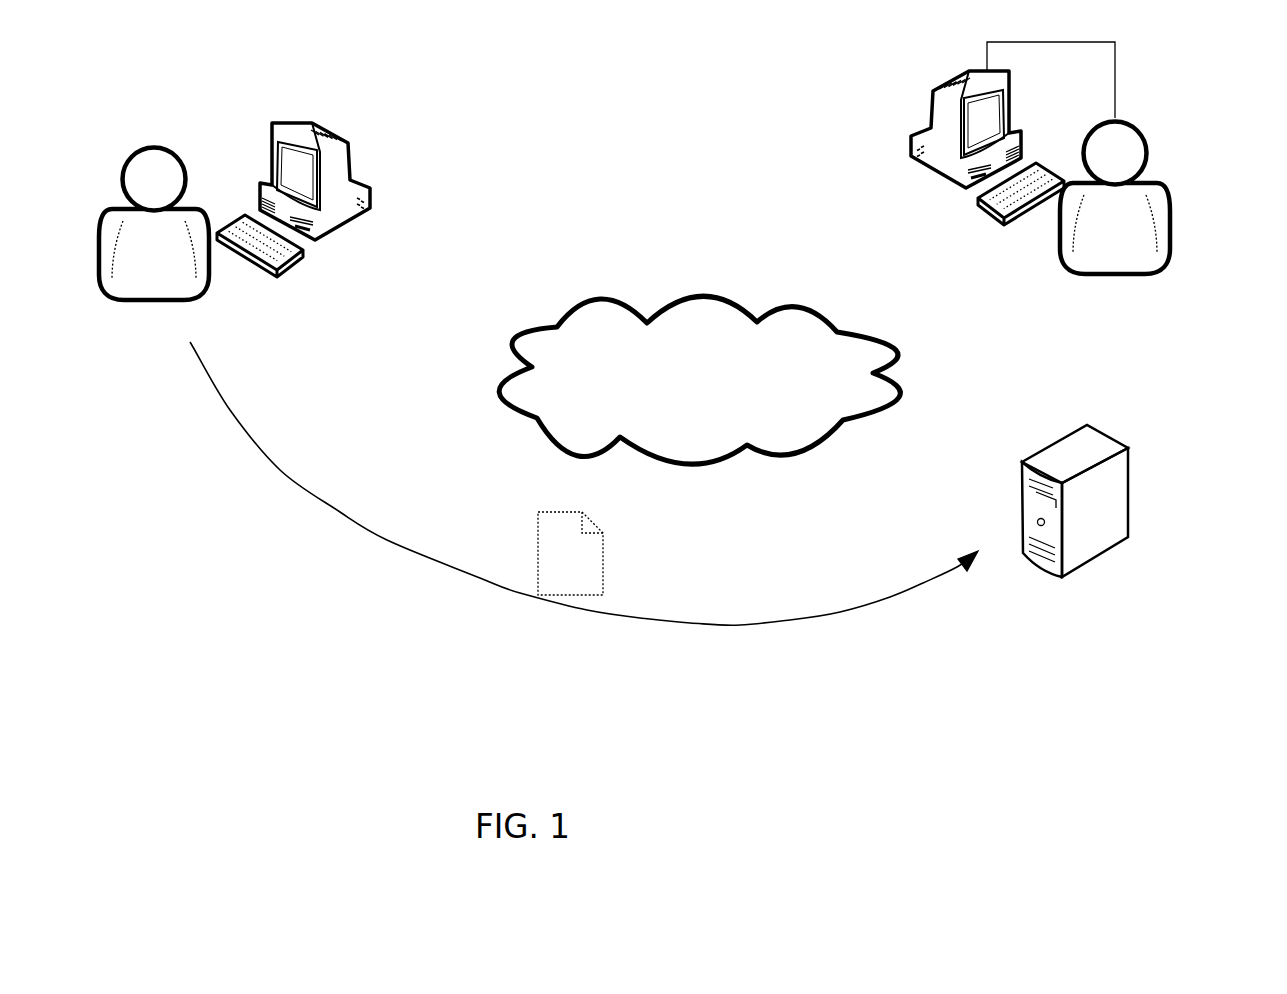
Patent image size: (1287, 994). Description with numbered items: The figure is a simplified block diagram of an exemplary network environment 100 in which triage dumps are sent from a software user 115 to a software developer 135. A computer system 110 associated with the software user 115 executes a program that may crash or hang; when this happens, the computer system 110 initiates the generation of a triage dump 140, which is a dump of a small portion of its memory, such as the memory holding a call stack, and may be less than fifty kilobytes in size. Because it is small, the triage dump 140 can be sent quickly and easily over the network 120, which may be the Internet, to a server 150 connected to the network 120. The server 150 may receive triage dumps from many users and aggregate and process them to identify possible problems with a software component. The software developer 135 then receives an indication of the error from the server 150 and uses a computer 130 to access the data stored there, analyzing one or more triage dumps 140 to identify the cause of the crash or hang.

The network environment 100 is at (1213, 685).
The computer system 110 is at (357, 227).
The software user 115 is at (174, 284).
The network 120 is at (726, 393).
The computer 130 is at (967, 190).
The software developer 135 is at (1136, 251).
The triage dump 140 is at (588, 586).
The server 150 is at (1116, 534).